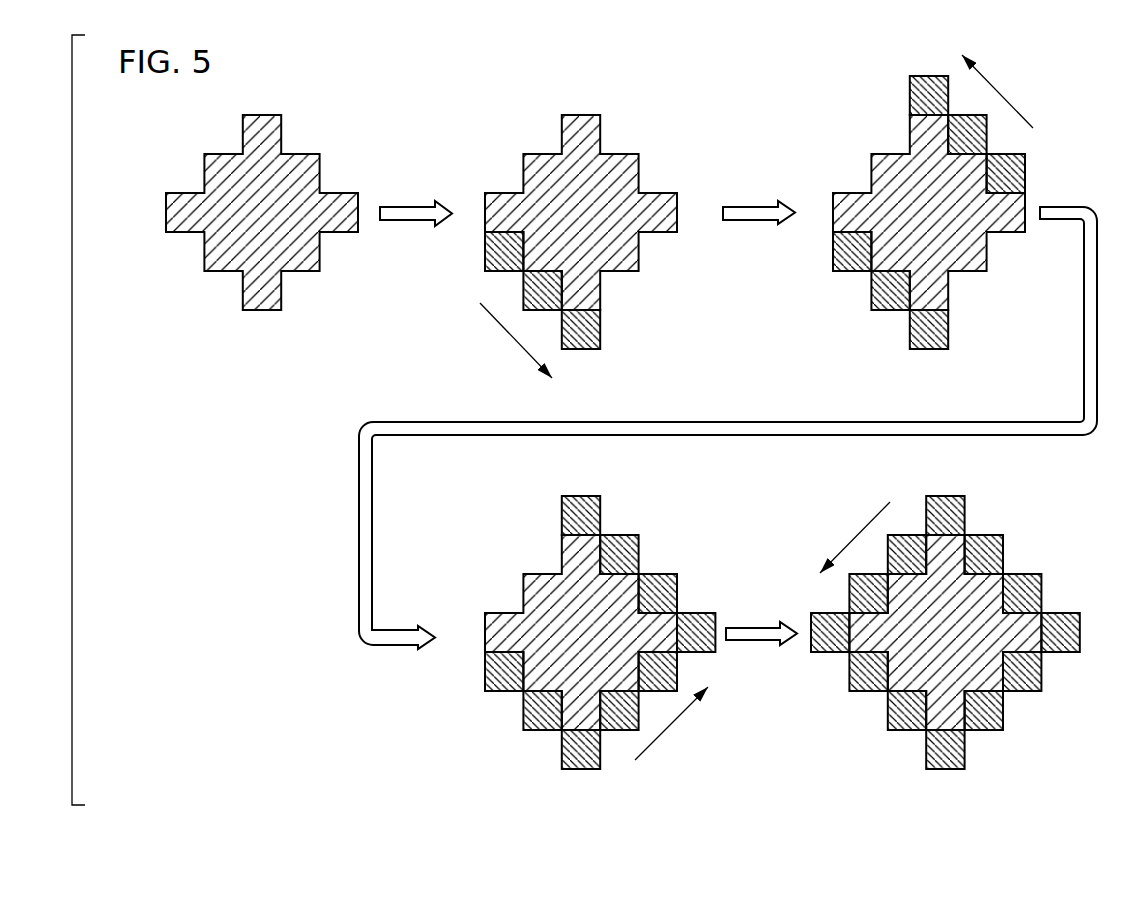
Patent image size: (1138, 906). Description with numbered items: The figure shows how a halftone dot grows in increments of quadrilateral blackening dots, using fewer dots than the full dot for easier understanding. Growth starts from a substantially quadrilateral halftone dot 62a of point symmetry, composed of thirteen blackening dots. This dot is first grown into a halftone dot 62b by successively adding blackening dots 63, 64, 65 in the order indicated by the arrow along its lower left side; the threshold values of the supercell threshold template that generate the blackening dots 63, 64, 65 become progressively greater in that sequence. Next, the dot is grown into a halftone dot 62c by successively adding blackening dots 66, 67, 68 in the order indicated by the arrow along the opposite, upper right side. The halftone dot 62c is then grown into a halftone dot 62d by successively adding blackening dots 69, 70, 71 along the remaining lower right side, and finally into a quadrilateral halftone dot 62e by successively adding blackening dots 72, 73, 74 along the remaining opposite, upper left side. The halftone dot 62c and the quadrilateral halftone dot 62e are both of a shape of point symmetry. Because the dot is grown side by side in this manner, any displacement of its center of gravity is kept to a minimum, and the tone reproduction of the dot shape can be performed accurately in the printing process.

The substantially quadrilateral halftone dot 62a is at (260, 114).
The halftone dot 62b is at (580, 114).
The halftone dot 62c is at (850, 190).
The halftone dot 62d is at (503, 612).
The quadrilateral halftone dot 62e is at (1060, 612).
The blackening dot 63 is at (500, 271).
The blackening dot 64 is at (539, 310).
The blackening dot 65 is at (576, 349).
The blackening dot 66 is at (1005, 155).
The blackening dot 67 is at (965, 117).
The blackening dot 68 is at (930, 78).
The blackening dot 69 is at (618, 730).
The blackening dot 70 is at (657, 692).
The blackening dot 71 is at (696, 652).
The blackening dot 72 is at (902, 538).
The blackening dot 73 is at (865, 578).
The blackening dot 74 is at (828, 617).